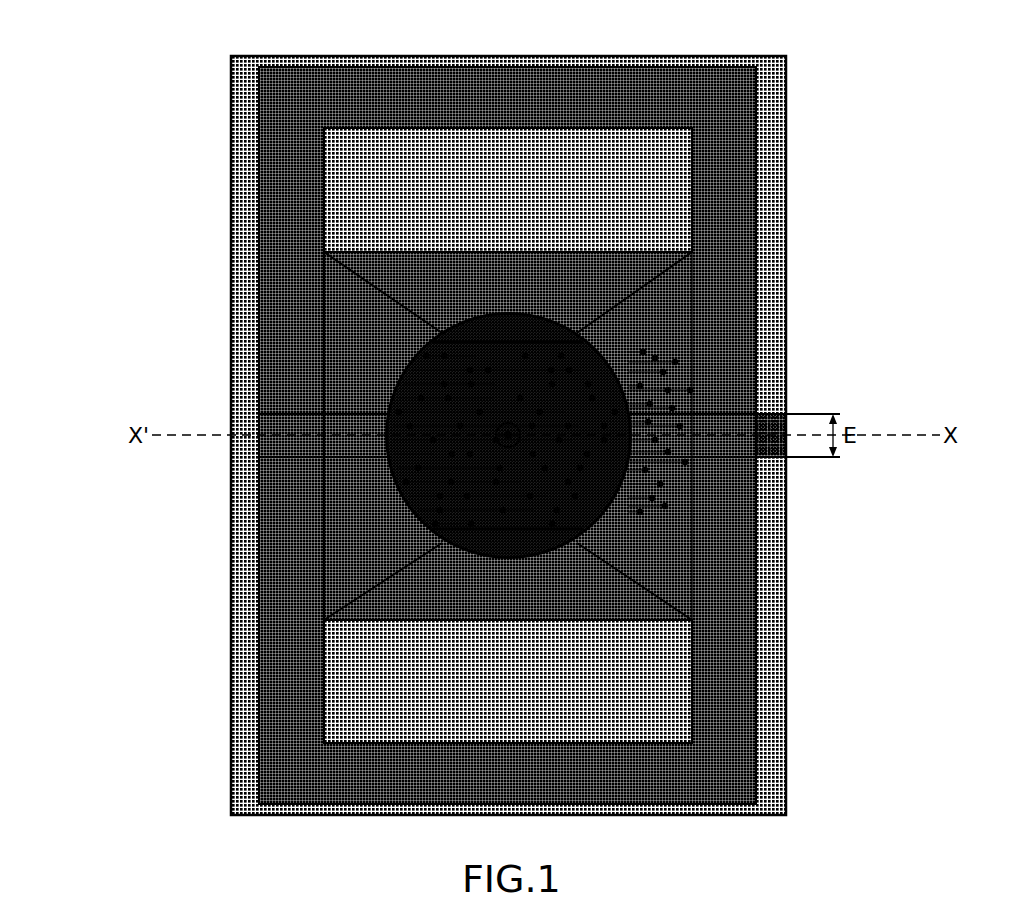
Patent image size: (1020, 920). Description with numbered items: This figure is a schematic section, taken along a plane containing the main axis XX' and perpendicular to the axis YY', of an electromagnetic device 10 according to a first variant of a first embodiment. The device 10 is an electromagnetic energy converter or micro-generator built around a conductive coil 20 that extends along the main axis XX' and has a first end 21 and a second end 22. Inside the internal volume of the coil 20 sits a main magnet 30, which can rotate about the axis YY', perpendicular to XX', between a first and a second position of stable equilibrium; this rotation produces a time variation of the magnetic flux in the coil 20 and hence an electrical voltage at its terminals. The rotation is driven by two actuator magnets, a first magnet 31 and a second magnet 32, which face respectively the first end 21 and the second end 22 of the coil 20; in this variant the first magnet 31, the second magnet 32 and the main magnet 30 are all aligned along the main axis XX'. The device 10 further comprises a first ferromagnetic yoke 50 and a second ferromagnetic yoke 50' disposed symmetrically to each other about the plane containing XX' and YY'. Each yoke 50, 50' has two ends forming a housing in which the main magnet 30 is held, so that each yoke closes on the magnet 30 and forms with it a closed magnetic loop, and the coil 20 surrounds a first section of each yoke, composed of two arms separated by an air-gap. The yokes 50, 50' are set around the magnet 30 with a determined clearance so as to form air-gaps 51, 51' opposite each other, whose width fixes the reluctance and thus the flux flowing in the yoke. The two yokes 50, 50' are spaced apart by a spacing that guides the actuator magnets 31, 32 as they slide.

The electromagnetic device 10 is at (120, 206).
The conductive coil 20 is at (337, 180).
The first end 21 is at (323, 293).
The second end 22 is at (693, 255).
The main magnet 30 is at (387, 395).
The first magnet 31 is at (323, 425).
The second magnet 32 is at (745, 418).
The first ferromagnetic yoke 50 is at (558, 435).
The second ferromagnetic yoke 50' is at (575, 780).
The air-gap 51 is at (639, 413).
The air-gap 51' is at (759, 462).